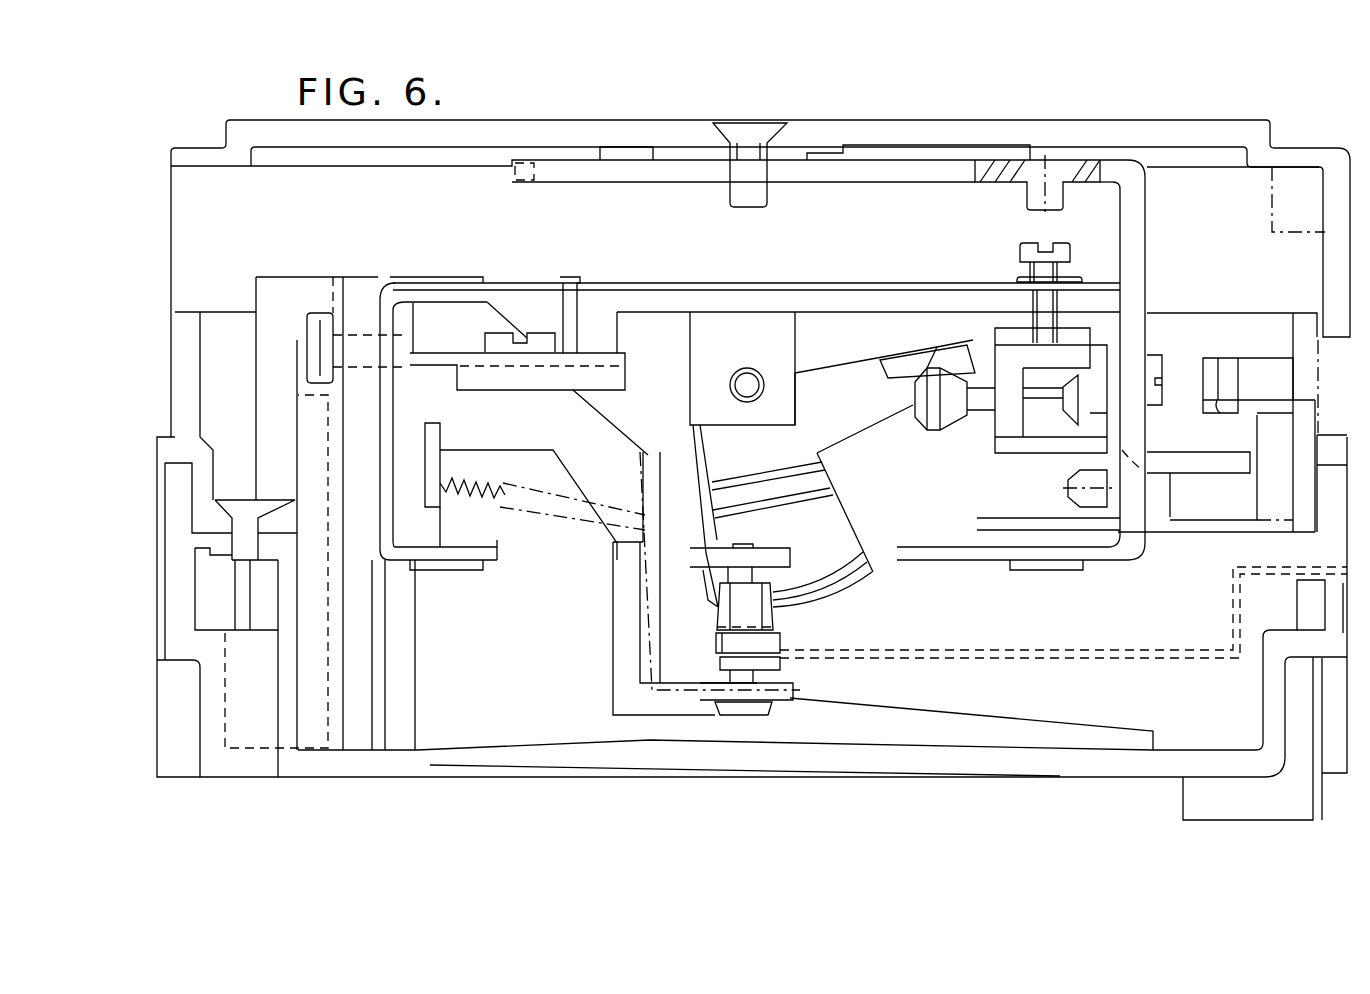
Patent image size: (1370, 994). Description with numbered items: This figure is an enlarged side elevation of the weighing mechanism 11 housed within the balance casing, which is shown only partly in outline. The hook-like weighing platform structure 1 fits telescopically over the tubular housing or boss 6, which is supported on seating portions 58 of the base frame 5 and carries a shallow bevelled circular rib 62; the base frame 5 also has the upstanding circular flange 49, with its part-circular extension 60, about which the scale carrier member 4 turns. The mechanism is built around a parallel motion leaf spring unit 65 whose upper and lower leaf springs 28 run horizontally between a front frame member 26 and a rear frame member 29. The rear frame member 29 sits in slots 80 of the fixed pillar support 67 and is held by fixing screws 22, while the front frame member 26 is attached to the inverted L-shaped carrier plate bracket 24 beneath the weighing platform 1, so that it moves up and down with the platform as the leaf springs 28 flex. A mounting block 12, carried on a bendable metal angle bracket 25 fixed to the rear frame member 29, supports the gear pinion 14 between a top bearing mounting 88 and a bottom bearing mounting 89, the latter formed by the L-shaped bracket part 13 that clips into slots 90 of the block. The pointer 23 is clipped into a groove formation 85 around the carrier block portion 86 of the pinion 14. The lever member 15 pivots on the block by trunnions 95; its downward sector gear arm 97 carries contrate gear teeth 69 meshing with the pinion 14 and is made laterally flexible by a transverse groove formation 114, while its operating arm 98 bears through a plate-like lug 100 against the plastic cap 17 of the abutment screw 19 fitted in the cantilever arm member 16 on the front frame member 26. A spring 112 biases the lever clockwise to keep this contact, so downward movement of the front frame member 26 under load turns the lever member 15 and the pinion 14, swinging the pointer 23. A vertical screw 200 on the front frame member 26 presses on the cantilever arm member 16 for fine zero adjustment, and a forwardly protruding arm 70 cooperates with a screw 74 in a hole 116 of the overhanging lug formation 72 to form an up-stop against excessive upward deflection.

The weighing platform structure 1 is at (1100, 136).
The scale carrier member 4 is at (1341, 592).
The base frame 5 is at (1045, 762).
The tubular housing or boss 6 is at (1302, 382).
The weighing mechanism 11 is at (480, 260).
The mounting block 12 is at (457, 331).
The bracket part 13 is at (650, 460).
The gear pinion 14 is at (740, 618).
The lever member 15 is at (822, 383).
The cantilever arm member 16 is at (1000, 388).
The plastic cap 17 is at (930, 418).
The abutment screw 19 is at (1037, 398).
The fixing screws 22 is at (315, 362).
The pointer 23 is at (1185, 653).
The carrier plate bracket 24 is at (993, 185).
The angle bracket 25 is at (440, 360).
The front frame member 26 is at (1113, 308).
The leaf springs 28 is at (683, 284).
The rear frame member 29 is at (383, 402).
The circular flange 49 is at (1305, 612).
The seating portions 58 is at (220, 565).
The part-circular extension 60 is at (180, 510).
The bevelled circular rib 62 is at (1320, 434).
The parallel motion leaf spring unit 65 is at (1092, 272).
The pillar support 67 is at (360, 697).
The contrate gear teeth 69 is at (867, 557).
The forwardly protruding arm 70 is at (1207, 470).
The lug formation 72 is at (1253, 395).
The screw 74 is at (1217, 405).
The slots 80 is at (377, 650).
The groove formation 85 is at (718, 648).
The carrier block portion 86 is at (780, 665).
The top bearing mounting 88 is at (790, 562).
The bottom bearing mounting 89 is at (760, 695).
The slots 90 is at (645, 478).
The trunnions 95 is at (750, 382).
The sector gear arm 97 is at (850, 495).
The operating arm 98 is at (865, 355).
The plate-like lug 100 is at (937, 356).
The spring 112 is at (463, 500).
The transverse groove formation 114 is at (767, 485).
The hole 116 is at (1203, 360).
The screw 200 is at (1030, 245).